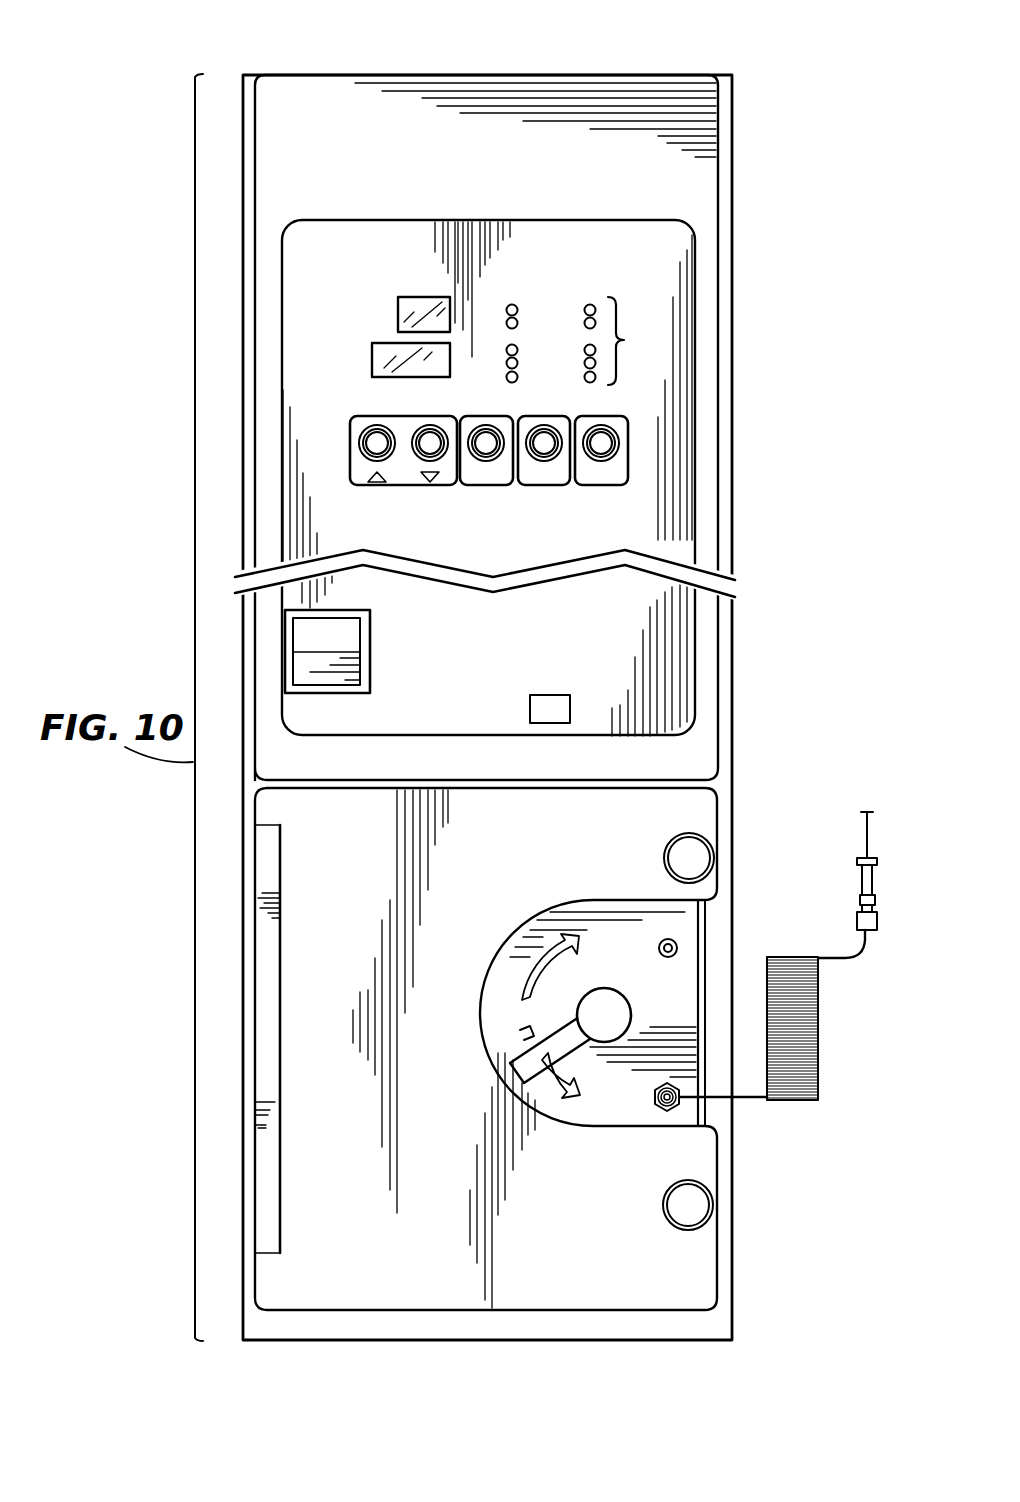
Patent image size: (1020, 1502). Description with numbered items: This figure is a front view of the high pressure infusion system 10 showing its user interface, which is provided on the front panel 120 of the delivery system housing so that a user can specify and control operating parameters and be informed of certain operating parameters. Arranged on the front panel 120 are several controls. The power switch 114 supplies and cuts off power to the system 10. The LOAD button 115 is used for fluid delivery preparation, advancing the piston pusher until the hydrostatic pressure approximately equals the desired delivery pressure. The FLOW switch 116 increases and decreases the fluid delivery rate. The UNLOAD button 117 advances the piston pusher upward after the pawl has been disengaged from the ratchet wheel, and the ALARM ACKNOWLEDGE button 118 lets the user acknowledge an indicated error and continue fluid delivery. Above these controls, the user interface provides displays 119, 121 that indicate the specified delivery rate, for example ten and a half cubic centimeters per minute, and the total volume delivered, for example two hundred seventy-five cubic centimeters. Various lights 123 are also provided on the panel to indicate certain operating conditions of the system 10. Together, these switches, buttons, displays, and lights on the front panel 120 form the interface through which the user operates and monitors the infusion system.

The system 10 is at (745, 193).
The front panel 120 is at (688, 77).
The display 119 is at (417, 297).
The display 121 is at (382, 343).
The lights 123 is at (624, 340).
The ALARM ACKNOWLEDGE button 118 is at (620, 453).
The UNLOAD button 117 is at (560, 488).
The FLOW switch 116 is at (405, 487).
The LOAD button 115 is at (483, 487).
The power switch 114 is at (347, 630).